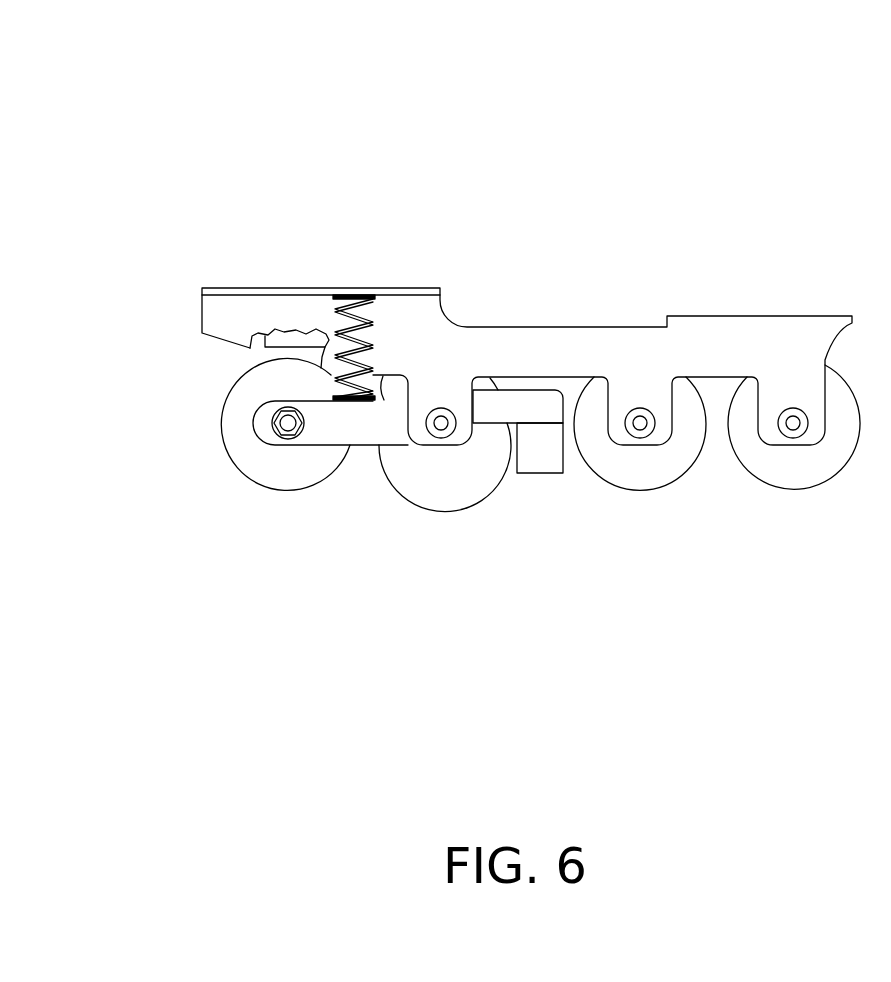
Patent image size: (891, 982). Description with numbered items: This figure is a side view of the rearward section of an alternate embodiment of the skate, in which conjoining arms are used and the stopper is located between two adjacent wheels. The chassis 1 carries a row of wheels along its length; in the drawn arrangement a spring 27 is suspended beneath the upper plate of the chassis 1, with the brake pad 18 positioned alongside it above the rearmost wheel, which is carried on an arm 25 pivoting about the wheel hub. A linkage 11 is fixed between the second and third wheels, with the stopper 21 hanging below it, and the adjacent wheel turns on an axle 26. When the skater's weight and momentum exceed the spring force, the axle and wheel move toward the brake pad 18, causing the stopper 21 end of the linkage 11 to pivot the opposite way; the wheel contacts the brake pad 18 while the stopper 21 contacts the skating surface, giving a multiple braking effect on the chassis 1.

The chassis 1 is at (725, 340).
The linkage 11 is at (515, 401).
The brake pad 18 is at (297, 338).
The stopper 21 is at (540, 453).
The brake arm 25 is at (349, 430).
The wheel axle 26 is at (441, 437).
The spring 27 is at (340, 325).